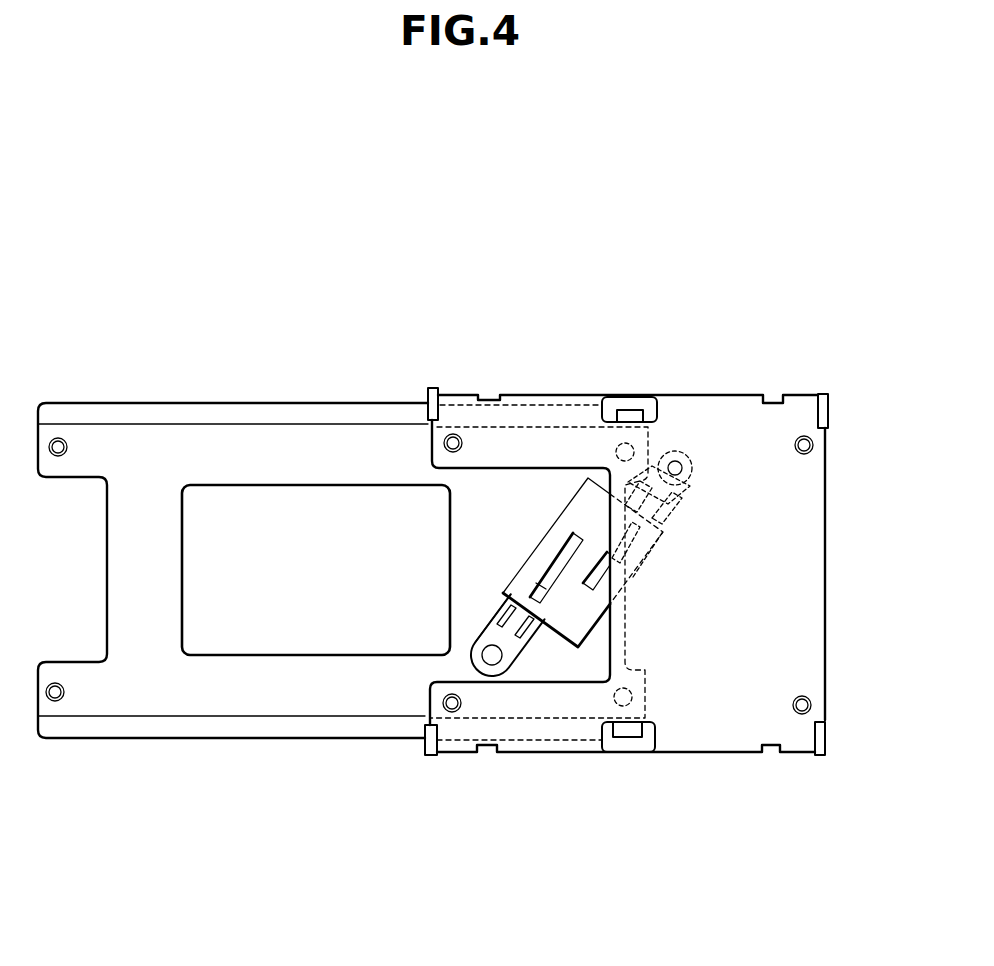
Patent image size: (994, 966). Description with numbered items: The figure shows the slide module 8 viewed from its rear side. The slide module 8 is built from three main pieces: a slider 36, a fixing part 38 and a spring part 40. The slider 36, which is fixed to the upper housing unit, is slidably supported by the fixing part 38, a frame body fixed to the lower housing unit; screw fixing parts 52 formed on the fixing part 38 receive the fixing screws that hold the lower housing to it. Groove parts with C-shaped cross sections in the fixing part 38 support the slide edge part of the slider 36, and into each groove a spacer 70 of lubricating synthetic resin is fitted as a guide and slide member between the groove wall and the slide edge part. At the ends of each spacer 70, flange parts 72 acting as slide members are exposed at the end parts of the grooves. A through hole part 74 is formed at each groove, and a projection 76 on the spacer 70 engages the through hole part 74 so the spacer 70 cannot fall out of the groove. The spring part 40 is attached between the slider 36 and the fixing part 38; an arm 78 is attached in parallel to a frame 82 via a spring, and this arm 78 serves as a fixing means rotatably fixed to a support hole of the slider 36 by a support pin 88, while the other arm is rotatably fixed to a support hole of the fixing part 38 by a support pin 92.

The slide module 8 is at (778, 887).
The slider 36 is at (112, 703).
The fixing part 38 is at (720, 738).
The spring part 40 is at (556, 593).
The screw fixing part 52 is at (444, 440).
The spacer 70 is at (778, 397).
The flange part 72 is at (428, 392).
The through hole part 74 is at (615, 397).
The projection 76 is at (630, 407).
The arm 78 is at (483, 634).
The frame 82 is at (555, 533).
The support pin 88 is at (483, 667).
The support pin 92 is at (687, 480).